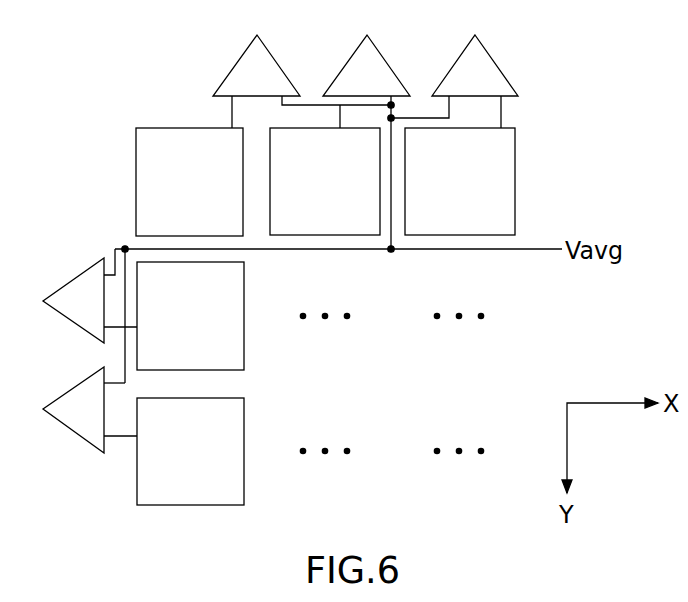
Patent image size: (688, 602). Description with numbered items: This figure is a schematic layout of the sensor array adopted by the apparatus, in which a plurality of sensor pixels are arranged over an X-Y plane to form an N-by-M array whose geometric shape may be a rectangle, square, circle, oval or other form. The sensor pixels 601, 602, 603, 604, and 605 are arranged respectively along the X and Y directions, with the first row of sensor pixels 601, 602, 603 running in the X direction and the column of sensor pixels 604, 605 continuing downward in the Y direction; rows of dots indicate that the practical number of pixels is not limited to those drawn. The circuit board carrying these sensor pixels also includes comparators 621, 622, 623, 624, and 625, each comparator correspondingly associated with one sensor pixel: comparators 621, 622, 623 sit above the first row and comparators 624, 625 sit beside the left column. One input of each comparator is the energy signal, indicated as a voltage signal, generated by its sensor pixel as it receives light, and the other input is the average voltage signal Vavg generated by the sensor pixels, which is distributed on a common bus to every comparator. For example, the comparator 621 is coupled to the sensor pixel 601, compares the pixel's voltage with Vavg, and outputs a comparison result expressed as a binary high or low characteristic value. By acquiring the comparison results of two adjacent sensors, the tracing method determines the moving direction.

The sensor pixel 601 is at (172, 137).
The sensor pixel 602 is at (325, 218).
The sensor pixel 603 is at (458, 218).
The sensor pixel 604 is at (233, 342).
The sensor pixel 605 is at (233, 477).
The comparator 621 is at (267, 68).
The comparator 622 is at (377, 68).
The comparator 623 is at (487, 68).
The comparator 624 is at (72, 290).
The comparator 625 is at (72, 398).